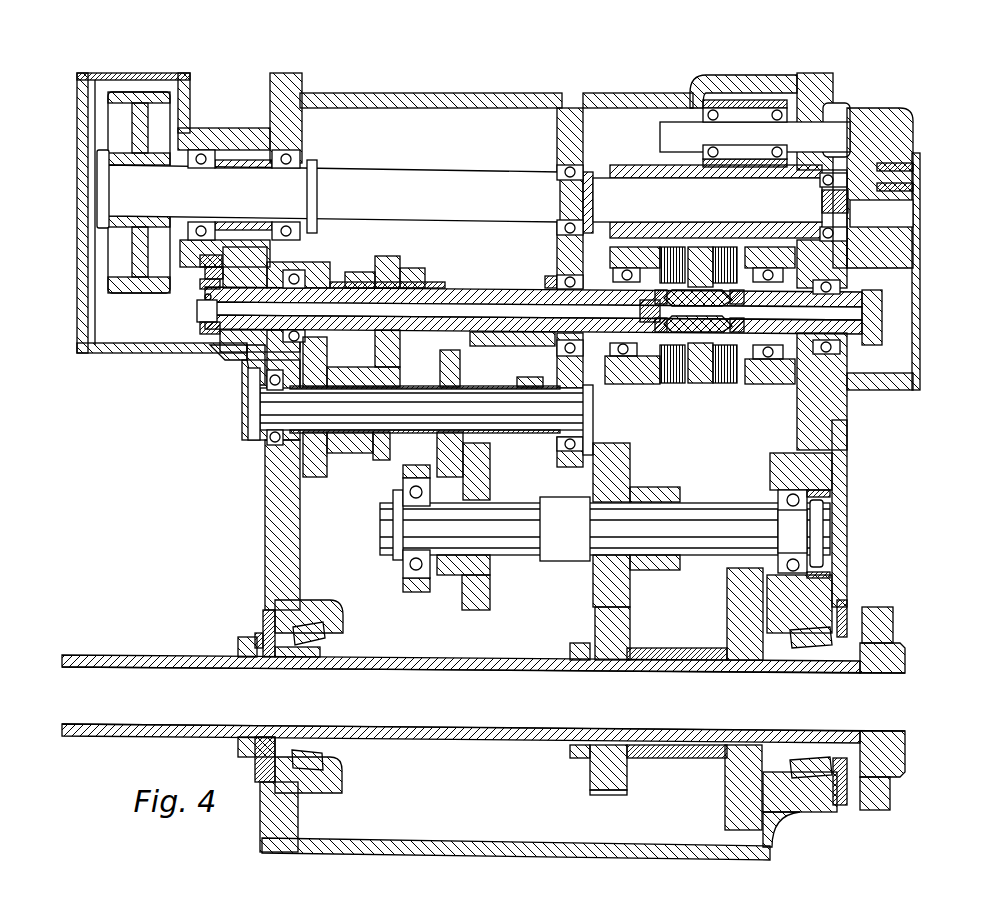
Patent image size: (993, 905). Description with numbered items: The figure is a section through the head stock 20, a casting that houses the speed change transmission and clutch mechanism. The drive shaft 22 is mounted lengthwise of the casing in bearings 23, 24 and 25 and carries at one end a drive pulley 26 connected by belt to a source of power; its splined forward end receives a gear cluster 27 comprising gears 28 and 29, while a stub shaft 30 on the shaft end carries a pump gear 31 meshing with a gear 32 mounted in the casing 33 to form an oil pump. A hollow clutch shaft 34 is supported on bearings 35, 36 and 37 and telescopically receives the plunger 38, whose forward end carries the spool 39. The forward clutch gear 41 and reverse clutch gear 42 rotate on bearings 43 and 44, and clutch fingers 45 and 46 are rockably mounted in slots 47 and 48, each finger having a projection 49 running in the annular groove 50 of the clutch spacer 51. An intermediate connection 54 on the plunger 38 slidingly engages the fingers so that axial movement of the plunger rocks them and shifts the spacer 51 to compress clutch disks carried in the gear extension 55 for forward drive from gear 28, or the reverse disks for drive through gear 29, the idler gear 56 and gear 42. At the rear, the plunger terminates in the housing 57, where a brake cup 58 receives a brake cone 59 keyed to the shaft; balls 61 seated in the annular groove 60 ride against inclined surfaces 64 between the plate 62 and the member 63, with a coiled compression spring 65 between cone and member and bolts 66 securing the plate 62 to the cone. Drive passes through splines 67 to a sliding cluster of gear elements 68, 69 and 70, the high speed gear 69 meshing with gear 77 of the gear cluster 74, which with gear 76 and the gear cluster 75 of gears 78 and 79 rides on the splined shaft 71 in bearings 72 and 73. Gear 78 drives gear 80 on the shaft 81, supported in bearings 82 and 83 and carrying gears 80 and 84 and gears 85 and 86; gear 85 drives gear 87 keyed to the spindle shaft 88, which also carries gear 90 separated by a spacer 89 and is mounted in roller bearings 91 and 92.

The head stock 20 is at (272, 545).
The drive shaft 22 is at (345, 191).
The bearing 23 is at (205, 152).
The bearing 24 is at (557, 168).
The bearing 25 is at (845, 170).
The drive pulley 26 is at (115, 118).
The gear cluster 27 is at (660, 178).
The gear 28 is at (628, 165).
The gear 29 is at (828, 170).
The stub shaft 30 is at (850, 212).
The pump gear 31 is at (900, 210).
The gear 32 is at (913, 165).
The casing 33 is at (870, 120).
The clutch shaft 34 is at (465, 348).
The bearing 35 is at (303, 284).
The bearing 36 is at (552, 276).
The bearing 37 is at (842, 286).
The plunger 38 is at (475, 300).
The spool 39 is at (880, 373).
The forward clutch gear 41 is at (612, 384).
The reverse clutch gear 42 is at (772, 386).
The bearing 43 is at (610, 358).
The bearing 44 is at (768, 360).
The clutch finger 45 is at (745, 297).
The clutch finger 46 is at (745, 325).
The slot 47 is at (653, 300).
The slot 48 is at (653, 319).
The projection 49 is at (700, 290).
The annular groove 50 is at (705, 247).
The clutch spacer 51 is at (695, 383).
The intermediate connection 54 is at (648, 322).
The gear extension 55 is at (672, 247).
The idler gear 56 is at (770, 100).
The housing 57 is at (160, 354).
The brake cup 58 is at (250, 355).
The brake cone 59 is at (225, 355).
The annular groove 60 is at (198, 312).
The balls 61 is at (204, 297).
The plate 62 is at (200, 284).
The member 63 is at (209, 261).
The inclined surfaces 64 is at (200, 328).
The coiled compression spring 65 is at (250, 270).
The bolts 66 is at (205, 272).
The splines 67 is at (428, 284).
The gear element 68 is at (360, 269).
The high speed gear 69 is at (389, 260).
The gear element 70 is at (412, 268).
The splined shaft 71 is at (425, 409).
The bearing 72 is at (267, 440).
The bearing 73 is at (585, 444).
The gear cluster 74 is at (350, 455).
The gear cluster 75 is at (492, 446).
The gear 76 is at (318, 478).
The gear 77 is at (380, 462).
The gear 78 is at (462, 352).
The gear 79 is at (525, 388).
The gear 80 is at (450, 577).
The shaft 81 is at (505, 515).
The bearing 82 is at (403, 562).
The bearing 83 is at (775, 498).
The gear 84 is at (478, 610).
The gear 85 is at (622, 452).
The gear 86 is at (665, 487).
The gear 87 is at (595, 618).
The spindle shaft 88 is at (485, 738).
The spacer 89 is at (678, 648).
The gear 90 is at (727, 594).
The roller bearing 91 is at (328, 636).
The roller bearing 92 is at (862, 612).